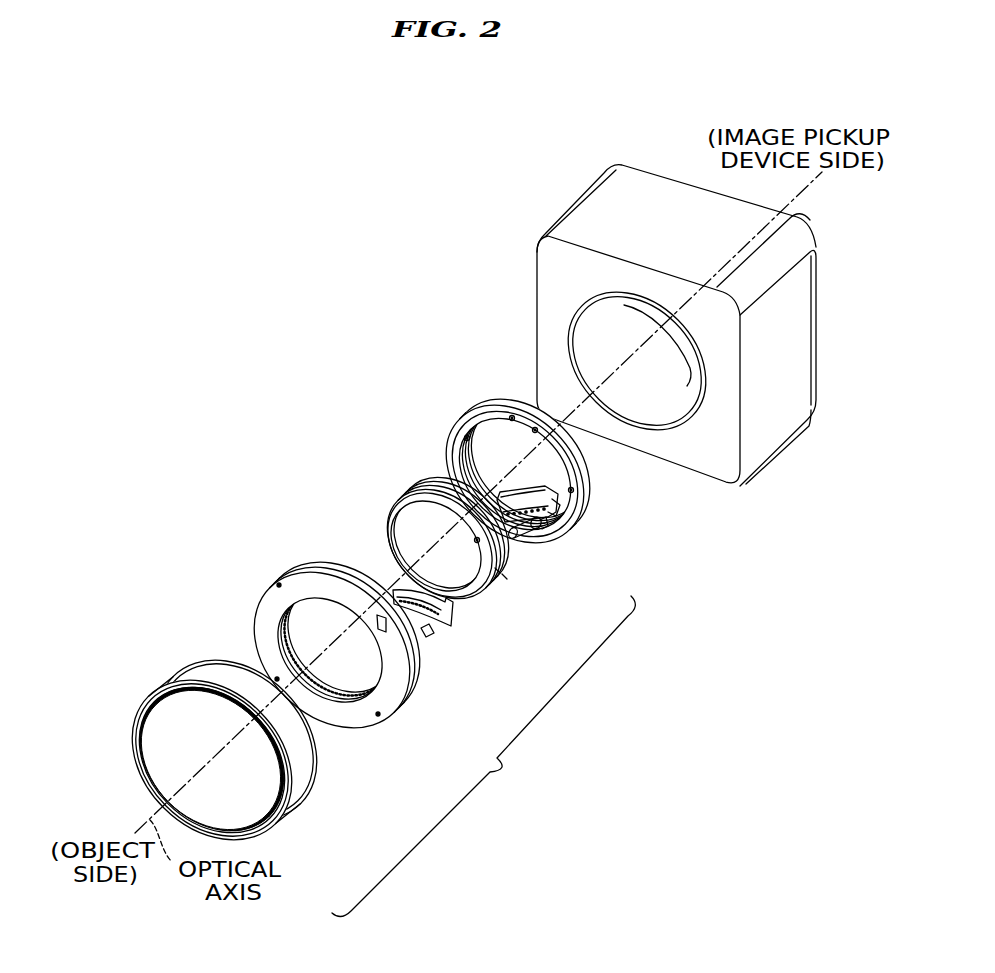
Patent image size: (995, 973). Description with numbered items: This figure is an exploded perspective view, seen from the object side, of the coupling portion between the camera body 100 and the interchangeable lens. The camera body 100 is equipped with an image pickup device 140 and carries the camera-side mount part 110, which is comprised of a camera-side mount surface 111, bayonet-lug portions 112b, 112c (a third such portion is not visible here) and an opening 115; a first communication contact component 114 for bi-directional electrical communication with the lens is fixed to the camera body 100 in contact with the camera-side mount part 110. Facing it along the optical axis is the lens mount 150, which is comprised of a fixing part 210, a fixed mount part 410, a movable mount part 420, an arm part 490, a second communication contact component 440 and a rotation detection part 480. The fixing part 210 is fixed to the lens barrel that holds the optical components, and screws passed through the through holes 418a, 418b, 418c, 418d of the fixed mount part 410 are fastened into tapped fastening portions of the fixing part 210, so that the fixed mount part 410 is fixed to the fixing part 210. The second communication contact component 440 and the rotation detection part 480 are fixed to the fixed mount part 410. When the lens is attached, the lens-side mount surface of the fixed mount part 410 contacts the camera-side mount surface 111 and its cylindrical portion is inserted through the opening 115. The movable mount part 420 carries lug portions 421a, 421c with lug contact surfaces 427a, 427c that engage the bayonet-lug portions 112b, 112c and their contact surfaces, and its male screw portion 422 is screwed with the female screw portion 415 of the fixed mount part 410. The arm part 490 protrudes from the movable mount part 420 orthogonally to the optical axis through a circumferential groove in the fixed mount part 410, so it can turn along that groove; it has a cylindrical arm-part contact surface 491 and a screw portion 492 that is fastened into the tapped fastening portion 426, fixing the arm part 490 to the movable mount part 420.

The camera body 100 is at (643, 325).
The image pickup device 140 is at (583, 325).
The camera-side mount part 110 is at (525, 475).
The camera-side mount surface 111 is at (582, 480).
The bayonet-lug portion 112b is at (552, 523).
The bayonet-lug portion 112c is at (462, 442).
The first communication contact component 114 is at (555, 505).
The opening 115 is at (483, 463).
The arm part 490 is at (527, 533).
The arm-part contact surface 491 is at (533, 535).
The screw portion 492 is at (512, 540).
The movable mount part 420 is at (445, 539).
The male screw portion 422 is at (443, 487).
The lug portion 421a is at (506, 577).
The lug portion 421c is at (433, 492).
The fastening portion 426 is at (480, 543).
The lug contact surface 427a is at (499, 573).
The lug contact surface 427c is at (417, 493).
The second communication contact component 440 is at (447, 623).
The rotation detection part 480 is at (440, 657).
The fixed mount part 410 is at (326, 649).
The female screw portion 415 is at (373, 687).
The through hole 418a is at (380, 625).
The through hole 418b is at (378, 715).
The through hole 418c is at (277, 679).
The through hole 418d is at (279, 585).
The fixing part 210 is at (183, 673).
The lens mount 150 is at (483, 756).